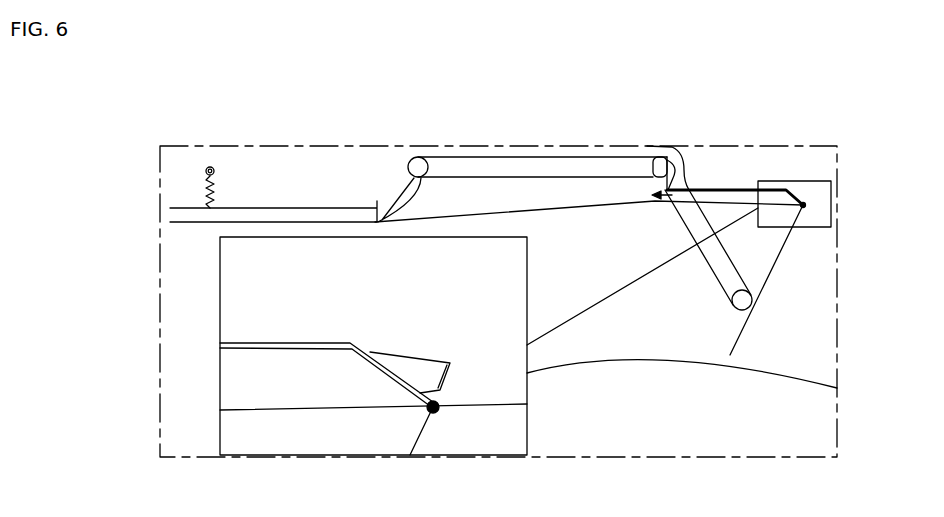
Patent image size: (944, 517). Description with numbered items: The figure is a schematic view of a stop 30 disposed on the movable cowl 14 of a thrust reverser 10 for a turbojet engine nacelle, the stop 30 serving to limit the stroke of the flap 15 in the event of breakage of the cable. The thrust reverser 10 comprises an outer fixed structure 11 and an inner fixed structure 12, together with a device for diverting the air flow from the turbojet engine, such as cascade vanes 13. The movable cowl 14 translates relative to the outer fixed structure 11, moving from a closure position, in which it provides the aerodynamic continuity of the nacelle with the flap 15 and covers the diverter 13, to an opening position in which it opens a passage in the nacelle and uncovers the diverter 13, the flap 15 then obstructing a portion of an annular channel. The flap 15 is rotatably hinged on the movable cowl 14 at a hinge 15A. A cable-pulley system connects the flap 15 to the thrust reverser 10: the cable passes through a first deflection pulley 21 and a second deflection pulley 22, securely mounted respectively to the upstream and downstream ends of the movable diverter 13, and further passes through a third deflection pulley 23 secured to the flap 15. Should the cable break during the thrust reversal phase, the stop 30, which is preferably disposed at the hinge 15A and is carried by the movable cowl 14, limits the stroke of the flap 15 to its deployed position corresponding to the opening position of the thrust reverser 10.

The thrust reverser 10 is at (193, 124).
The outer fixed structure 11 is at (168, 217).
The inner fixed structure 12 is at (688, 424).
The cascade vanes 13 is at (507, 160).
The movable cowl 14 is at (247, 280).
The flap 15 is at (777, 262).
The hinge 15A is at (805, 205).
The first deflection pulley 21 is at (410, 143).
The second deflection pulley 22 is at (677, 150).
The third deflection pulley 23 is at (747, 302).
The stop 30 is at (421, 370).